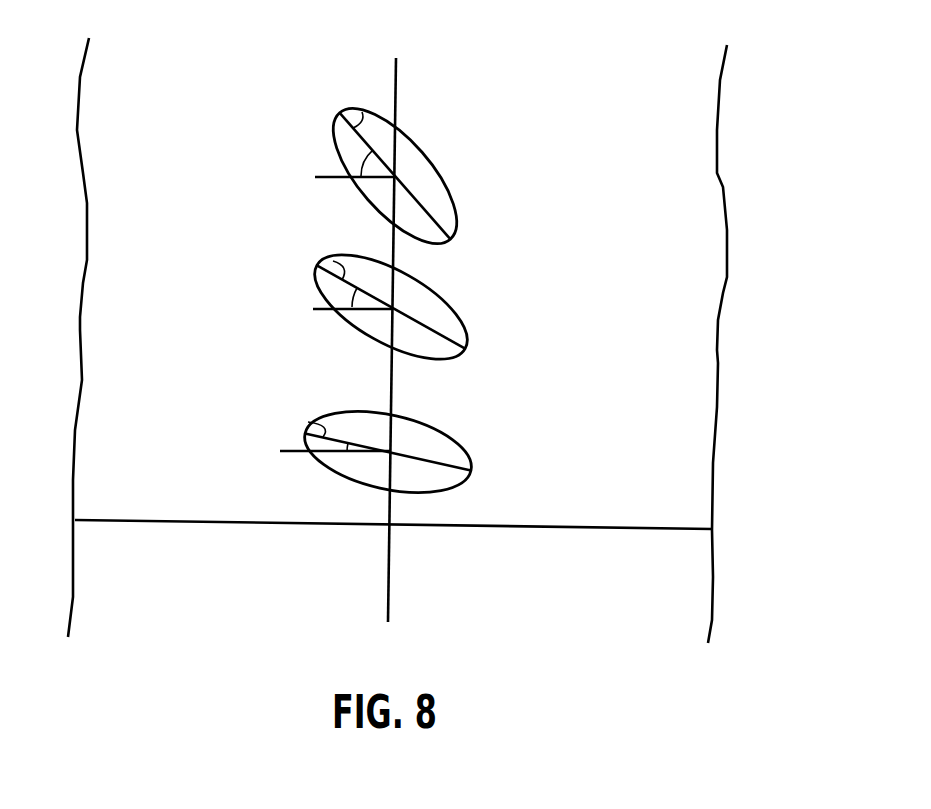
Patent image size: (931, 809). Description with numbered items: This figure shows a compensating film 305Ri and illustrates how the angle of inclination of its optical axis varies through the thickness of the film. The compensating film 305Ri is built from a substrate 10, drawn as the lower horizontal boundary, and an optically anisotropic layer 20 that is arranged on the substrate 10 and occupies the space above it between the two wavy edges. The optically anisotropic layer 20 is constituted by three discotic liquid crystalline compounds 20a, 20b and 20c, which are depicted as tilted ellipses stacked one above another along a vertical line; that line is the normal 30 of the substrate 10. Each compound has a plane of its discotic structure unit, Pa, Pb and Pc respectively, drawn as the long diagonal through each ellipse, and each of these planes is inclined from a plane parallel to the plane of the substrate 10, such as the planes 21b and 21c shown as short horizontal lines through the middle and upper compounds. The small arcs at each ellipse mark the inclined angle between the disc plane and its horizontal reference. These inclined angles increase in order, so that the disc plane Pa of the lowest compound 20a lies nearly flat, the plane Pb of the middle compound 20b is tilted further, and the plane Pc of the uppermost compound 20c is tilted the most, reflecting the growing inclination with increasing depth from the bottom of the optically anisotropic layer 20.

The substrate 10 is at (703, 585).
The optically anisotropic layer 20 is at (705, 362).
The normal of the substrate 30 is at (395, 87).
The discotic liquid crystalline compound 20a is at (471, 452).
The discotic liquid crystalline compound 20b is at (465, 326).
The discotic liquid crystalline compound 20c is at (450, 192).
The plane parallel to the substrate 21b is at (336, 343).
The plane parallel to the substrate 21c is at (339, 205).
The compensating film 305Ri is at (735, 187).
The plane of discotic structure unit Pa is at (308, 422).
The plane of discotic structure unit Pb is at (333, 261).
The plane of discotic structure unit Pc is at (362, 112).